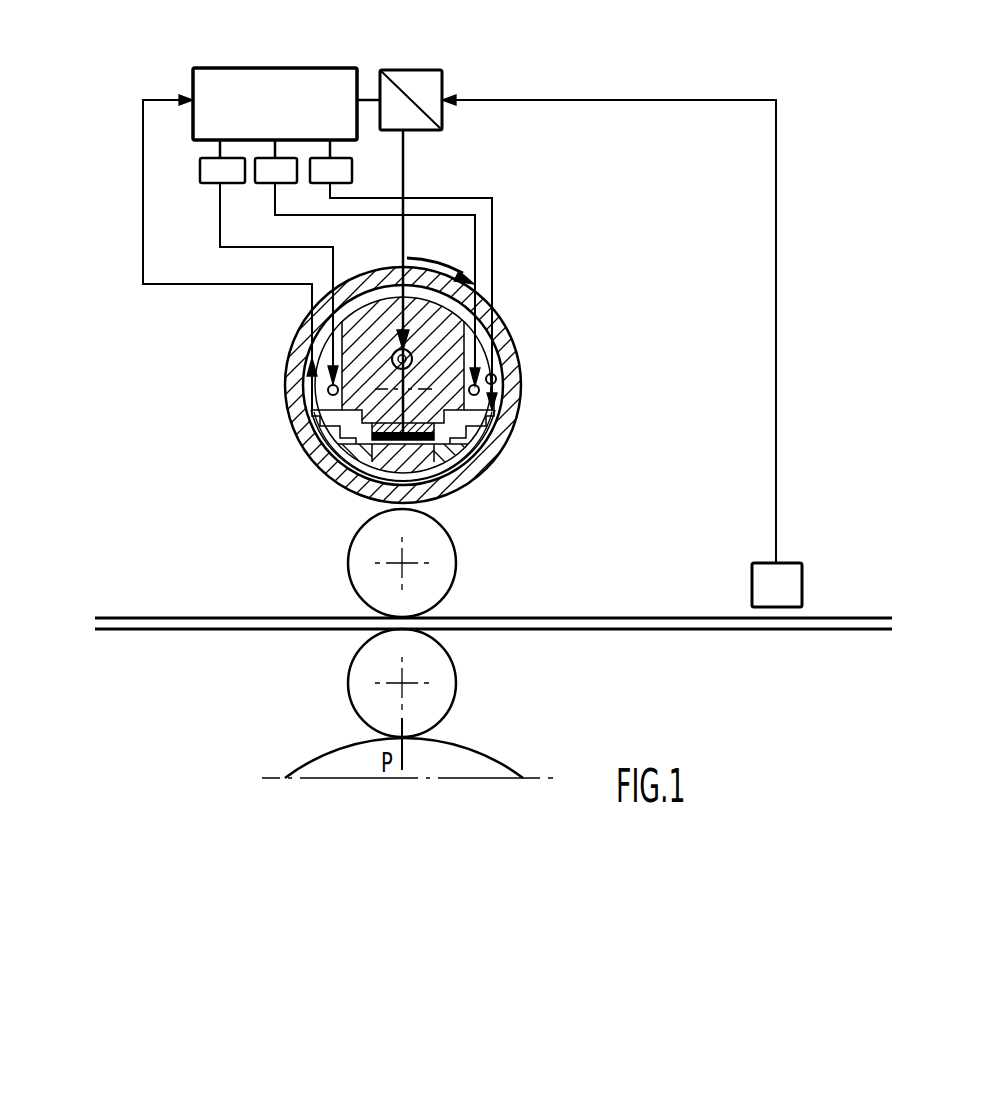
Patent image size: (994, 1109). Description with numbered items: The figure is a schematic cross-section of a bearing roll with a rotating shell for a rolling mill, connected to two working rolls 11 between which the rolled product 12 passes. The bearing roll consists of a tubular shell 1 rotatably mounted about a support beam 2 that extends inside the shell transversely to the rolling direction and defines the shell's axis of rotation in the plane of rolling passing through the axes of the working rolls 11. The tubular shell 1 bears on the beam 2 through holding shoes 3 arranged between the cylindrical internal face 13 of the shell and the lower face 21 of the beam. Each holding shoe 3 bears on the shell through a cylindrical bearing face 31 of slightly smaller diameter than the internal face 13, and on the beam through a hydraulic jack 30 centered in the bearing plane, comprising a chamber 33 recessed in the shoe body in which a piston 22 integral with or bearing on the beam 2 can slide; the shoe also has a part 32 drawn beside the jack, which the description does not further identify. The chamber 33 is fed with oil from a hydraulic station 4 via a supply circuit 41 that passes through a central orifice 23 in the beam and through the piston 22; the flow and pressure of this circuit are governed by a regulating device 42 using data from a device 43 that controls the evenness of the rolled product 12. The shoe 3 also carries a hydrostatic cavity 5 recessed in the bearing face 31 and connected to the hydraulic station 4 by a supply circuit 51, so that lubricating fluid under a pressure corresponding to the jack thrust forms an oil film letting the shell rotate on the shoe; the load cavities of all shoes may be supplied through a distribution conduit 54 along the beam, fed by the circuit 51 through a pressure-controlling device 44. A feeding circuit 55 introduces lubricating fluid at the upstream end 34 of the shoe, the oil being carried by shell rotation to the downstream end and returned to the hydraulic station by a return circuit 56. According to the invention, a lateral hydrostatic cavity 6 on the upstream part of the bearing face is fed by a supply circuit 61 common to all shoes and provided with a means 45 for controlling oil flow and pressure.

The tubular shell 1 is at (511, 367).
The support beam 2 is at (448, 323).
The holding shoe 3 is at (500, 448).
The hydraulic station 4 is at (257, 82).
The hydrostatic cavity 5 is at (380, 474).
The lateral hydrostatic cavity 6 is at (483, 473).
The working rolls 11 is at (457, 578).
The rolled product 12 is at (582, 617).
The cylindrical internal face 13 is at (505, 458).
The lower face 21 is at (496, 390).
The piston 22 is at (470, 450).
The central orifice 23 is at (412, 357).
The hydraulic jack 30 is at (350, 446).
The cylindrical bearing face 31 is at (372, 436).
The left clamping jaw 32 is at (310, 400).
The chamber 33 is at (398, 466).
The end of the shoe 34 is at (497, 418).
The supply circuit 41 is at (403, 153).
The regulating device 42 is at (421, 78).
The device controlling the evenness 43 is at (764, 572).
The device controlling the pressure 44 is at (210, 165).
The means for controlling the flow and the pressure 45 is at (269, 172).
The supply circuit 51 is at (222, 232).
The distribution conduit 54 is at (328, 388).
The feeding circuit 55 is at (495, 224).
The return circuit 56 is at (143, 192).
The supply circuit 61 is at (433, 218).